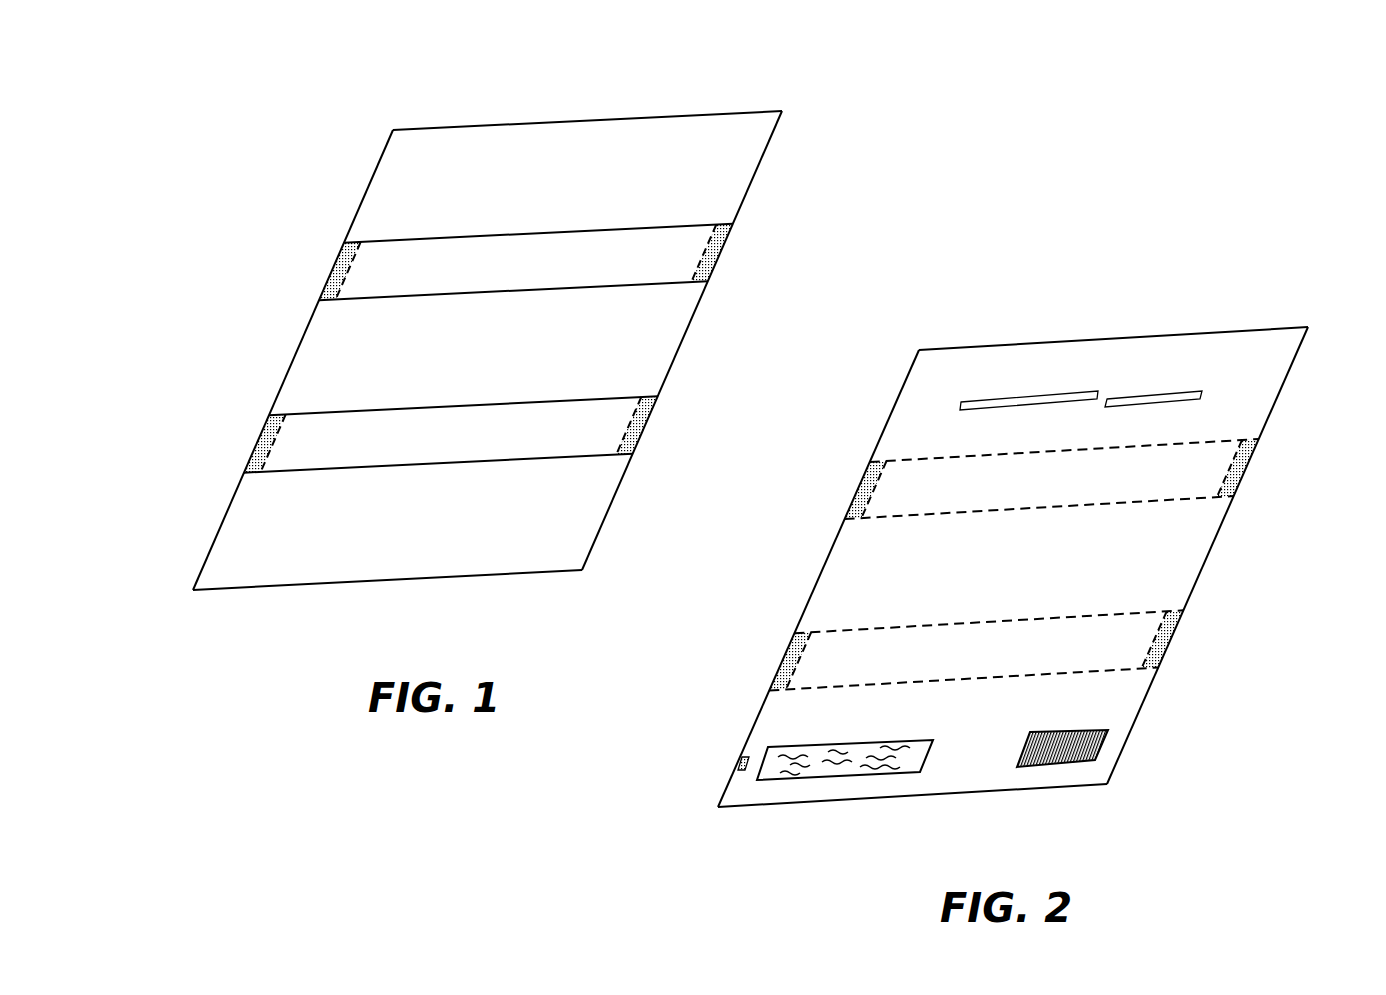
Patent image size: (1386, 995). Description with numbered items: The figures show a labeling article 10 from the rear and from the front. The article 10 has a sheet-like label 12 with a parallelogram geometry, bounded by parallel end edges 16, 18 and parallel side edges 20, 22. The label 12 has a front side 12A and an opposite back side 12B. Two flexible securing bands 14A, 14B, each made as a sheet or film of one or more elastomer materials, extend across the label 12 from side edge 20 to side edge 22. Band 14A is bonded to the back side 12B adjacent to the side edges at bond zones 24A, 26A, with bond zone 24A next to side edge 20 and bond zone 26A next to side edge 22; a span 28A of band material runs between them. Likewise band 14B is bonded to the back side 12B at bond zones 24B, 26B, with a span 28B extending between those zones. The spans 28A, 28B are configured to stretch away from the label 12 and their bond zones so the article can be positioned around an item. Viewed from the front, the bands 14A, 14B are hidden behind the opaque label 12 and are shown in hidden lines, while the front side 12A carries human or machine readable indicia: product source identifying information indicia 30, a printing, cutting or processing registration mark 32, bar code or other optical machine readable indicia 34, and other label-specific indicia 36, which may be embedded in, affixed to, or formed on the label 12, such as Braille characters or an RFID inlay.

In FIG. 1, the article 10 is at (713, 100).
In FIG. 2, the article 10 is at (1227, 313).
In FIG. 1, the label 12 is at (513, 157).
In FIG. 2, the label 12 is at (1114, 351).
In FIG. 2, the front side 12A is at (933, 381).
In FIG. 1, the back side 12B is at (263, 550).
In FIG. 1, the band 14A is at (515, 257).
In FIG. 2, the band 14A is at (1086, 496).
In FIG. 1, the band 14B is at (507, 433).
In FIG. 2, the band 14B is at (1003, 630).
In FIG. 1, the end edge 16 is at (583, 118).
In FIG. 2, the end edge 16 is at (1021, 341).
In FIG. 1, the end edge 18 is at (327, 583).
In FIG. 2, the end edge 18 is at (935, 797).
In FIG. 1, the side edge 20 is at (687, 330).
In FIG. 2, the side edge 20 is at (820, 573).
In FIG. 1, the side edge 22 is at (298, 345).
In FIG. 2, the side edge 22 is at (1207, 560).
In FIG. 1, the bond zone 24A is at (722, 222).
In FIG. 2, the bond zone 24A is at (863, 475).
In FIG. 1, the bond zone 24B is at (648, 395).
In FIG. 2, the bond zone 24B is at (785, 657).
In FIG. 1, the bond zone 26A is at (350, 242).
In FIG. 2, the bond zone 26A is at (1248, 468).
In FIG. 1, the bond zone 26B is at (277, 417).
In FIG. 2, the bond zone 26B is at (1175, 628).
In FIG. 1, the span 28A is at (457, 282).
In FIG. 1, the span 28B is at (380, 452).
In FIG. 2, the product source identifying information indicia 30 is at (1218, 376).
In FIG. 2, the printing/cutting/processing registration mark 32 is at (740, 775).
In FIG. 2, the bar code indicia 34 is at (1063, 768).
In FIG. 2, the indicia 36 is at (823, 772).